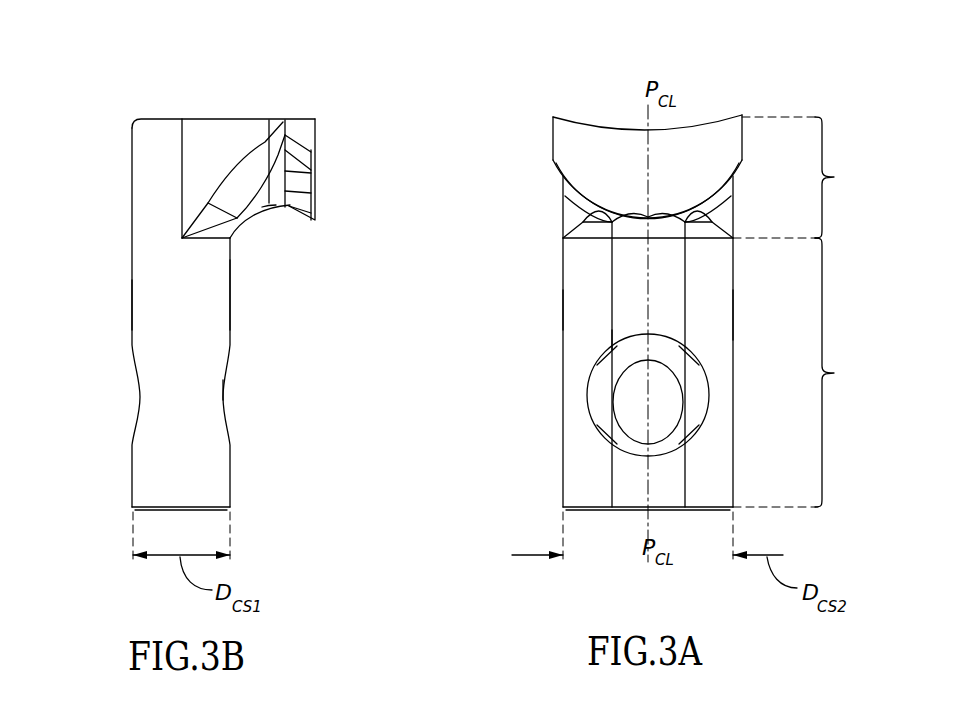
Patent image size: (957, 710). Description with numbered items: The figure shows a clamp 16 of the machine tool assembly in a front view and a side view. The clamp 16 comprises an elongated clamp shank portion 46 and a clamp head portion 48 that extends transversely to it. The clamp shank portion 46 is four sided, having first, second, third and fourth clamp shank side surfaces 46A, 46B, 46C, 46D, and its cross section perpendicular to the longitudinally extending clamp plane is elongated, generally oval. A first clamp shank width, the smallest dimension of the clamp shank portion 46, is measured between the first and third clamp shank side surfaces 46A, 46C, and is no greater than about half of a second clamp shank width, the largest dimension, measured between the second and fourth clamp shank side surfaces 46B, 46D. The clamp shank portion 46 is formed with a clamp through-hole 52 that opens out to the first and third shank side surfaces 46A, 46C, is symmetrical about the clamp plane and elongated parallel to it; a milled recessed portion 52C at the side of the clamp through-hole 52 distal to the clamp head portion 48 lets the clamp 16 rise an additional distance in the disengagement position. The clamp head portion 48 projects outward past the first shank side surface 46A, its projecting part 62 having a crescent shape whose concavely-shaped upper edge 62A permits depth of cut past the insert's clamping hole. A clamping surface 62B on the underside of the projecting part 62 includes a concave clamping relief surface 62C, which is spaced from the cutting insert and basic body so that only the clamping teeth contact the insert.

In FIG. 3B, the clamp 16 is at (338, 92).
In FIG. 3A, the clamp 16 is at (778, 78).
In FIG. 3A, the clamp shank portion 46 is at (718, 351).
In FIG. 3B, the first clamp shank side surface 46A is at (232, 302).
In FIG. 3A, the first clamp shank side surface 46A is at (583, 313).
In FIG. 3B, the second clamp shank side surface 46B is at (210, 335).
In FIG. 3A, the second clamp shank side surface 46B is at (598, 343).
In FIG. 3B, the third clamp shank side surface 46C is at (133, 303).
In FIG. 3A, the fourth clamp shank side surface 46D is at (733, 312).
In FIG. 3A, the clamp head portion 48 is at (803, 177).
In FIG. 3A, the clamp through-hole 52 is at (568, 335).
In FIG. 3A, the recessed portion 52C is at (690, 428).
In FIG. 3B, the projecting part 62 is at (304, 106).
In FIG. 3A, the projecting part 62 is at (540, 110).
In FIG. 3A, the concavely-shaped upper edge 62A is at (575, 119).
In FIG. 3B, the clamping surface 62B is at (312, 233).
In FIG. 3B, the clamping relief surface 62C is at (268, 206).